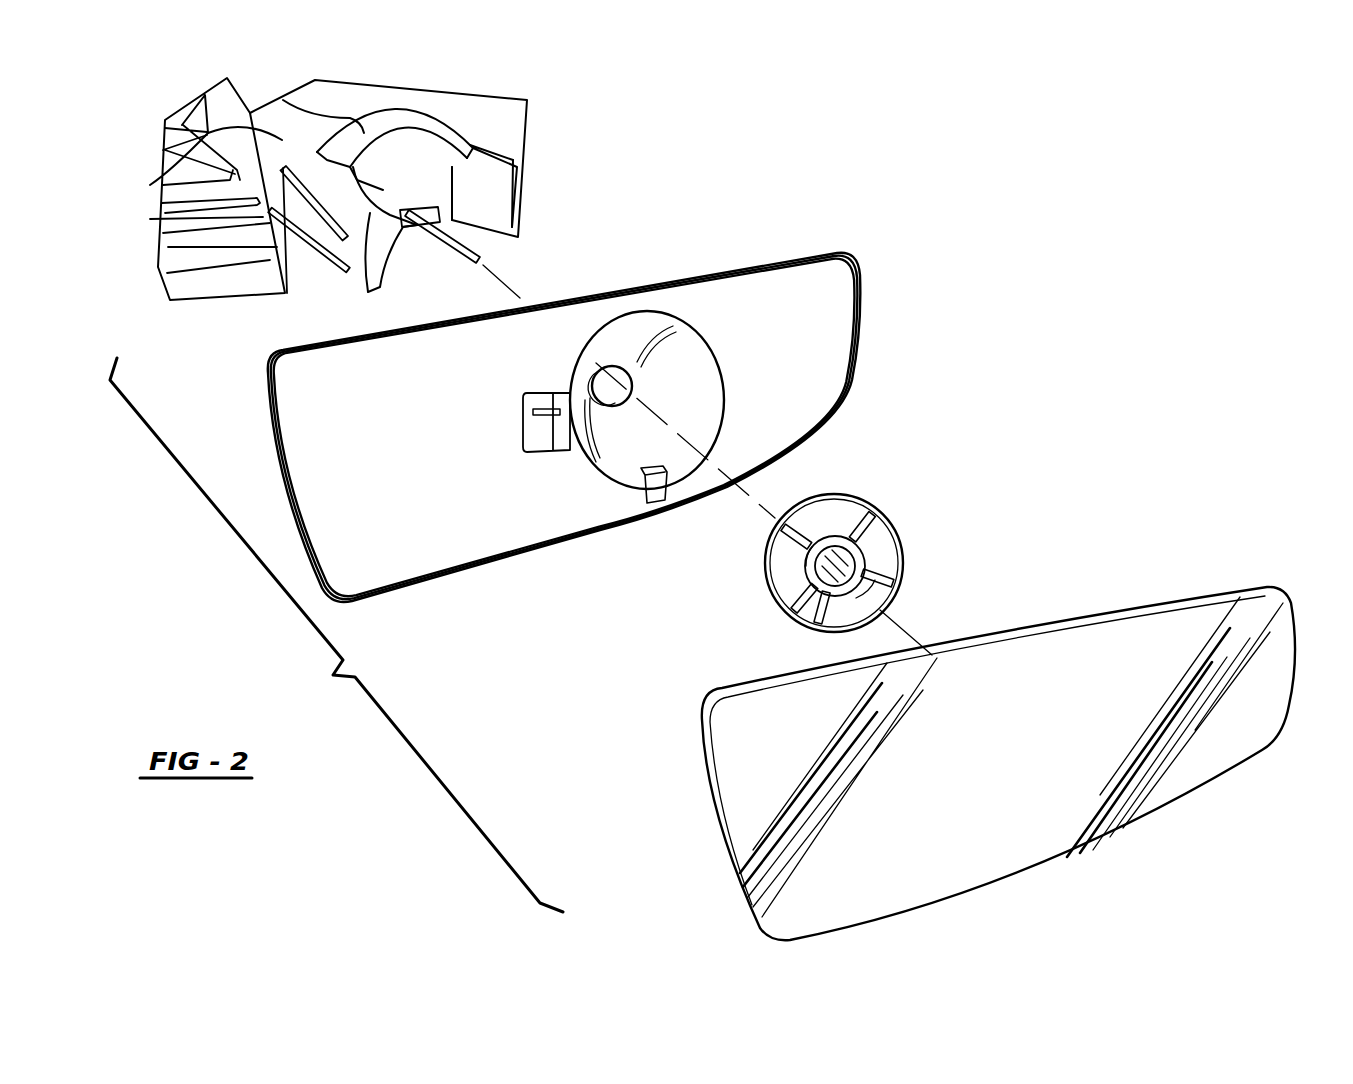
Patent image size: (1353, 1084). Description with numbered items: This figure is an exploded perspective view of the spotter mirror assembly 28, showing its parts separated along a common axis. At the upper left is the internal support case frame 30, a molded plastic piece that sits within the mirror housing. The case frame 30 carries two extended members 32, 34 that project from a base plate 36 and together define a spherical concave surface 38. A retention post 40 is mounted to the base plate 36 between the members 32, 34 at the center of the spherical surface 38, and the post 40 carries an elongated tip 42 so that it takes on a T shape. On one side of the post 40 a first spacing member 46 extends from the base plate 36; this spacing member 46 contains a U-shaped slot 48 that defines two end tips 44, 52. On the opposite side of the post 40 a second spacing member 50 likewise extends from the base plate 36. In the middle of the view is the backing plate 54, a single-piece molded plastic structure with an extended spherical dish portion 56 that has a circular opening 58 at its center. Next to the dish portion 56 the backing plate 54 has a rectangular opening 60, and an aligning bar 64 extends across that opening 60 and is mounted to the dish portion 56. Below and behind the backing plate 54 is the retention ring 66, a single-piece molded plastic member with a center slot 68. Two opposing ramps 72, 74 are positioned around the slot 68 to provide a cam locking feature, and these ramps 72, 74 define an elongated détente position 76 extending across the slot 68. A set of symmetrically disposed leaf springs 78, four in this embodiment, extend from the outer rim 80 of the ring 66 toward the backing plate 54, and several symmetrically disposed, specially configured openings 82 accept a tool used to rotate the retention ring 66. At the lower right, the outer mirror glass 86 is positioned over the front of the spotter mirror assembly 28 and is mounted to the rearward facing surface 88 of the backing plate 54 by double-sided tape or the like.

The spotter mirror assembly 28 is at (883, 261).
The internal support case frame 30 is at (503, 97).
The extended member 32 is at (283, 100).
The extended member 34 is at (482, 255).
The base plate 36 is at (162, 182).
The spherical concave surface 38 is at (464, 90).
The retention post 40 is at (455, 181).
The elongated tip 42 is at (387, 232).
The end tip 44 is at (158, 270).
The first spacing member 46 is at (157, 223).
The U-shaped slot 48 is at (262, 277).
The second spacing member 50 is at (508, 153).
The end tip 52 is at (352, 288).
The backing plate 54 is at (597, 401).
The extended spherical dish portion 56 is at (697, 387).
The circular opening 58 is at (613, 366).
The rectangular opening 60 is at (550, 452).
The aligning bar 64 is at (527, 395).
The retention ring 66 is at (884, 500).
The center slot 68 is at (899, 552).
The ramp 72 is at (793, 617).
The ramp 74 is at (885, 582).
The elongated détente position 76 is at (834, 548).
The leaf spring 78 is at (777, 598).
The outer rim 80 is at (898, 535).
The opening 82 is at (783, 541).
The outer mirror glass 86 is at (1108, 610).
The rearward facing surface 88 is at (815, 312).